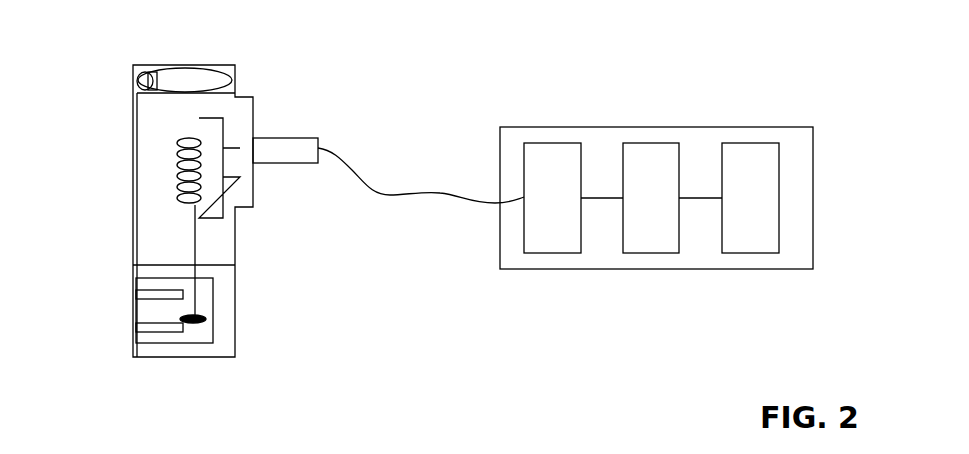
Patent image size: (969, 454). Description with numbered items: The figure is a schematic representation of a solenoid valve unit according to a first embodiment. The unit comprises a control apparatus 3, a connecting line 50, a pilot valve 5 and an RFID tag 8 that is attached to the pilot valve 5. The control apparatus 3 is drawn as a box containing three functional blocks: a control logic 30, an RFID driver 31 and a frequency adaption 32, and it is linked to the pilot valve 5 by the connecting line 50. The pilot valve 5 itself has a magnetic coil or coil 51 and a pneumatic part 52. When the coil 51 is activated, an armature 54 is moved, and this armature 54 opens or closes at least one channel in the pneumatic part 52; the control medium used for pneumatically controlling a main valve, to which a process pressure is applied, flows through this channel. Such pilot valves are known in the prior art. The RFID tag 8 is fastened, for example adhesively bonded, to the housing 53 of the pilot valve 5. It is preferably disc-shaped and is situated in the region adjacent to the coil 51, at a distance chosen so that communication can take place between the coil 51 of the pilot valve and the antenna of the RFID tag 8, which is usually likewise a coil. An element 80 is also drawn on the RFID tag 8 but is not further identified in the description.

The control apparatus 3 is at (656, 194).
The pilot valve 5 is at (192, 180).
The RFID tag 8 is at (183, 78).
The control logic 30 is at (753, 240).
The RFID driver 31 is at (643, 232).
The frequency adaption 32 is at (545, 232).
The connecting line 50 is at (410, 196).
The coil 51 is at (190, 153).
The pneumatic part 52 is at (148, 312).
The housing 53 is at (133, 190).
The armature 54 is at (193, 250).
The valve 80 is at (134, 72).